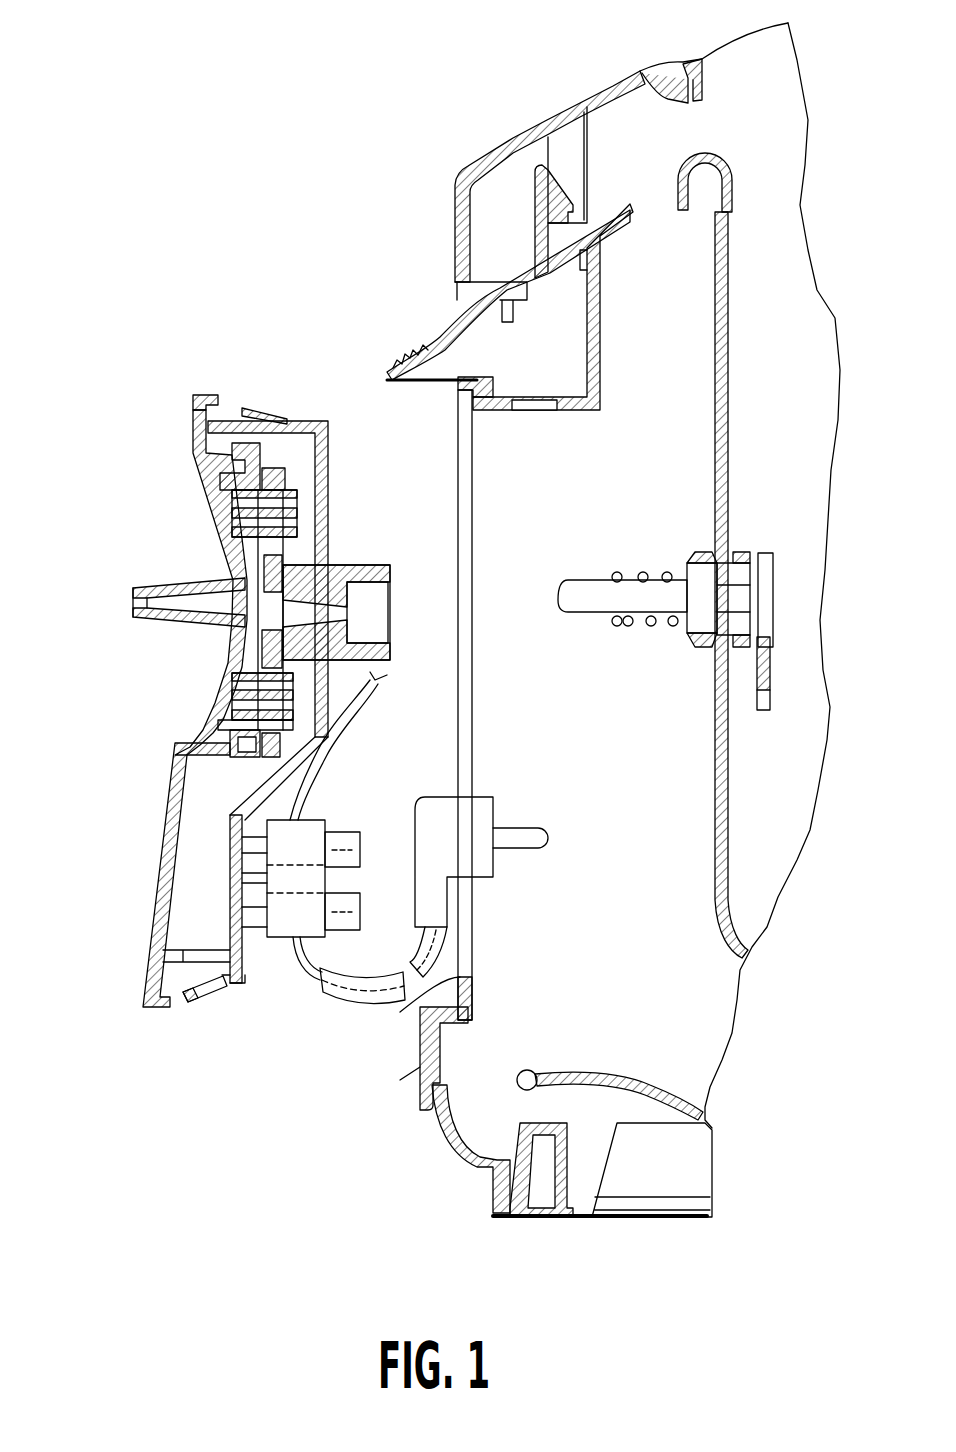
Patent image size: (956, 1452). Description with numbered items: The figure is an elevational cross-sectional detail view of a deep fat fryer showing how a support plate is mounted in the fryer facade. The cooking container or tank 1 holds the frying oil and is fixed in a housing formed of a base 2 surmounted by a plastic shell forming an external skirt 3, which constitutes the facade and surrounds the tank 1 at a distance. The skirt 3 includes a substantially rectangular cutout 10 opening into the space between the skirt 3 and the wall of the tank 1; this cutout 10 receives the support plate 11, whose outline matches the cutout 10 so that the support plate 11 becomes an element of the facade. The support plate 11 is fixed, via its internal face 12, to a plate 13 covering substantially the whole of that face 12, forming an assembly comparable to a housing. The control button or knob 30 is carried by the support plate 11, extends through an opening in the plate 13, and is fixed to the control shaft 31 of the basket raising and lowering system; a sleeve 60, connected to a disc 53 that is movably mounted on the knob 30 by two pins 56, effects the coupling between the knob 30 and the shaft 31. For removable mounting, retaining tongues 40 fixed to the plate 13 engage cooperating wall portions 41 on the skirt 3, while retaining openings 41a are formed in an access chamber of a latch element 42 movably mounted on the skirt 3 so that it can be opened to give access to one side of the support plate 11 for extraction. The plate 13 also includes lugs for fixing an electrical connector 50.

The cooking container 1 is at (729, 360).
The base 2 is at (453, 1157).
The external skirt 3 is at (420, 1067).
The cutout 10 is at (449, 456).
The support plate 11 is at (150, 892).
The internal face 12 is at (188, 803).
The plate 13 is at (328, 473).
The control button 30 is at (133, 597).
The control shaft 31 is at (583, 613).
The retaining tongues 40 is at (260, 408).
The wall portions 41 is at (423, 1000).
The retaining openings 41a is at (540, 407).
The latch element 42 is at (440, 335).
The electrical connector 50 is at (282, 925).
The disc 53 is at (277, 470).
The pins 56 is at (220, 483).
The sleeve 60 is at (353, 570).